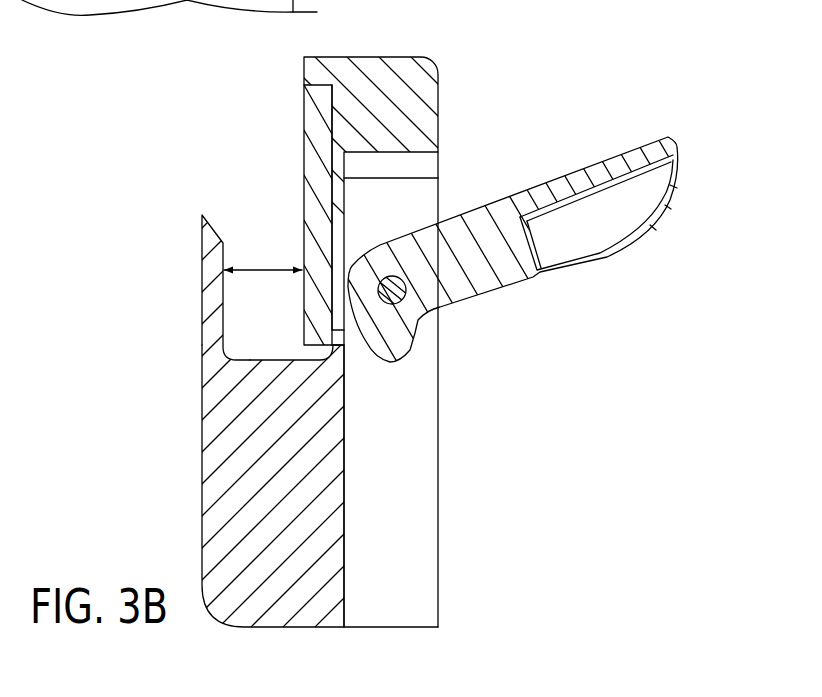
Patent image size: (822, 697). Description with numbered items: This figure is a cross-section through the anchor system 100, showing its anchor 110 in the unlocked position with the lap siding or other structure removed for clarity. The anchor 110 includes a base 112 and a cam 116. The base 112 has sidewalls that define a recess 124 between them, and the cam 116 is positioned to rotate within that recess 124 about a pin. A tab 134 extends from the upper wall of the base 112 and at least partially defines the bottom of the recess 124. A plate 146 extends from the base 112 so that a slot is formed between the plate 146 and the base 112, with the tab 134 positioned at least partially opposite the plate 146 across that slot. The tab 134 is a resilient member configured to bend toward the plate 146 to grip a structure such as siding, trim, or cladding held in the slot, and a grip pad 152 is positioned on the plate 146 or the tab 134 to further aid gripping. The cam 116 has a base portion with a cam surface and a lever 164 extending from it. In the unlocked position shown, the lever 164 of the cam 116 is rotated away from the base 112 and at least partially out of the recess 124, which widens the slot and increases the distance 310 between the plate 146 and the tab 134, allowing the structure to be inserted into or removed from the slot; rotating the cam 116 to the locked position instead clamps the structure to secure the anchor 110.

The anchor system 100 is at (550, 80).
The anchor 110 is at (420, 58).
The base 112 is at (223, 505).
The cam 116 is at (670, 133).
The recess 124 is at (415, 520).
The tab 134 is at (337, 202).
The plate 146 is at (210, 300).
The grip pad 152 is at (315, 122).
The lever 164 is at (633, 237).
The distance 310 is at (263, 267).